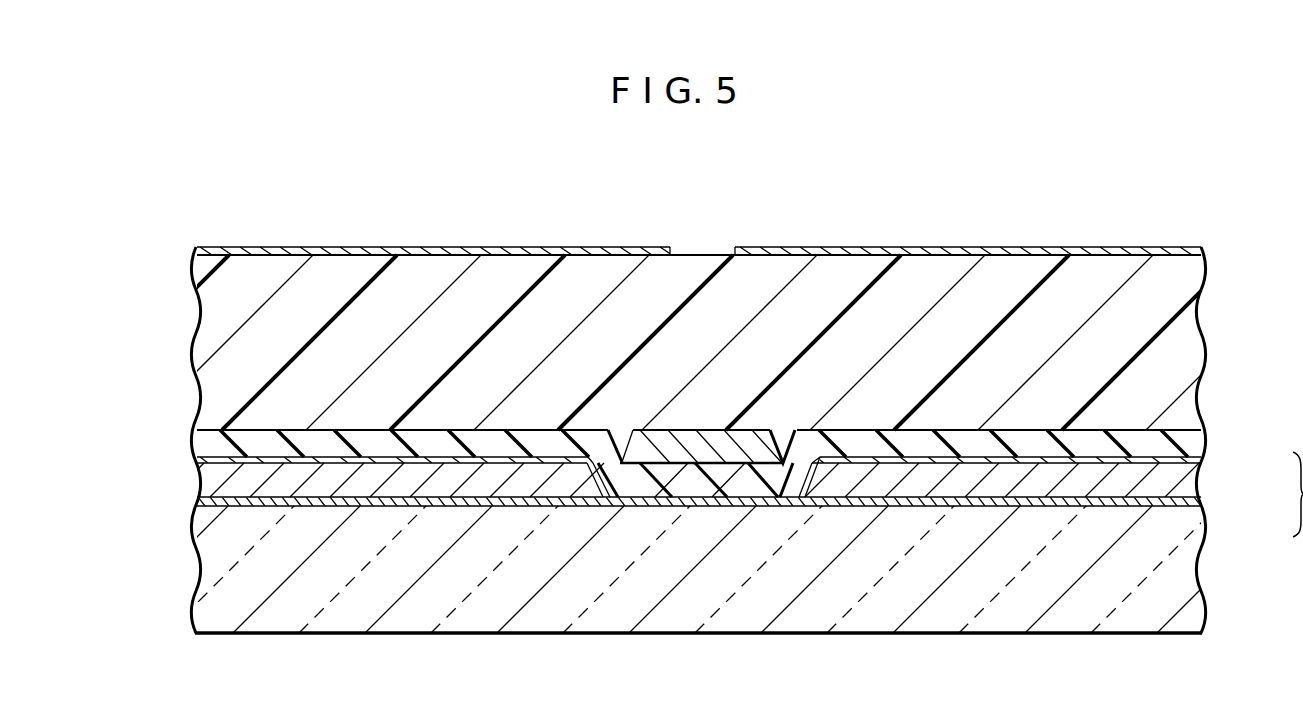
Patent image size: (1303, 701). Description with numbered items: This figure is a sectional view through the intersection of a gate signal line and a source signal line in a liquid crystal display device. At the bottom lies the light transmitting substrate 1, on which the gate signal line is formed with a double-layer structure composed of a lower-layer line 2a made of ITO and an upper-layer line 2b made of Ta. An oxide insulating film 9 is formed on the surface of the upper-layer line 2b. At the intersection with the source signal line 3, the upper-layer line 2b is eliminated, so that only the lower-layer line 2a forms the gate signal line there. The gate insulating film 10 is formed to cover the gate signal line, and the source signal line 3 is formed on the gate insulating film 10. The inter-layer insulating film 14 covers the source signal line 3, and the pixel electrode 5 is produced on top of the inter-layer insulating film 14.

The light transmitting substrate 1 is at (1192, 578).
The lower-layer line 2a is at (1207, 504).
The upper-layer line 2b is at (1192, 475).
The source signal line 3 is at (690, 440).
The pixel electrode 5 is at (1122, 247).
The oxide insulating film 9 is at (1207, 446).
The gate insulating film 10 is at (1122, 430).
The inter-layer insulating film 14 is at (1183, 275).